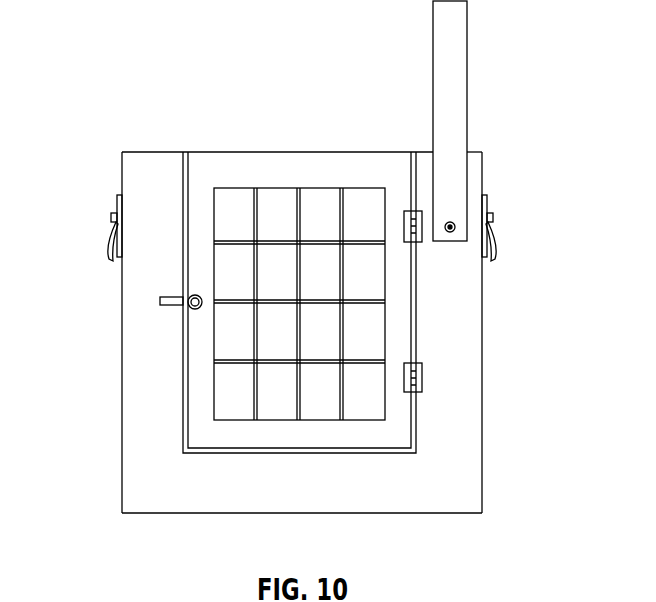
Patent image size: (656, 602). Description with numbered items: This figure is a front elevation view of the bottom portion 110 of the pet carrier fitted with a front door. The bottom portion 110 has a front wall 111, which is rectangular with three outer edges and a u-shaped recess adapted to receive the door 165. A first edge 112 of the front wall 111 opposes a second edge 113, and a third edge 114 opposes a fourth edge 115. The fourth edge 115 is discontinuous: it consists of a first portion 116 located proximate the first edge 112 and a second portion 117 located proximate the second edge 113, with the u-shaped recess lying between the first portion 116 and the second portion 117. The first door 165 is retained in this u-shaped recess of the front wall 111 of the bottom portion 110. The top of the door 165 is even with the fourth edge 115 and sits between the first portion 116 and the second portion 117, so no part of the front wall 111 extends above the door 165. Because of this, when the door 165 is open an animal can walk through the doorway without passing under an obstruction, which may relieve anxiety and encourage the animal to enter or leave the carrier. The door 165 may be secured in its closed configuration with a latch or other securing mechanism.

The bottom portion 110 is at (296, 292).
The front wall 111 is at (502, 277).
The first edge 112 is at (120, 425).
The second edge 113 is at (482, 410).
The third edge 114 is at (197, 515).
The fourth edge 115 is at (182, 228).
The first portion 116 is at (138, 151).
The second portion 117 is at (472, 152).
The door 165 is at (232, 269).